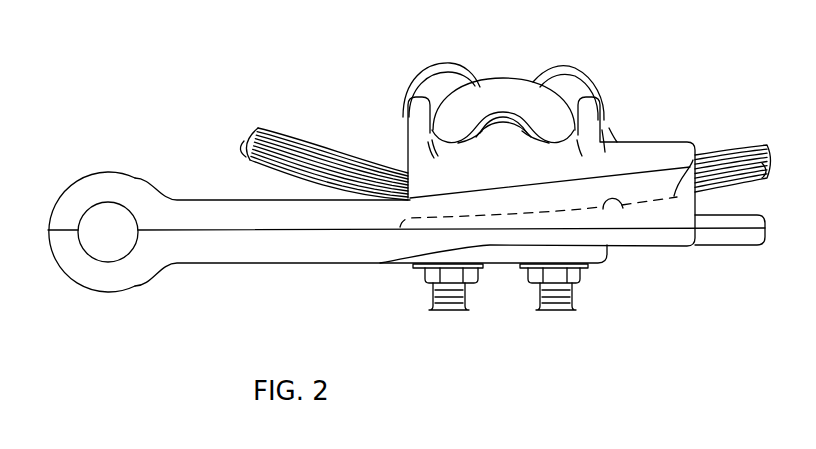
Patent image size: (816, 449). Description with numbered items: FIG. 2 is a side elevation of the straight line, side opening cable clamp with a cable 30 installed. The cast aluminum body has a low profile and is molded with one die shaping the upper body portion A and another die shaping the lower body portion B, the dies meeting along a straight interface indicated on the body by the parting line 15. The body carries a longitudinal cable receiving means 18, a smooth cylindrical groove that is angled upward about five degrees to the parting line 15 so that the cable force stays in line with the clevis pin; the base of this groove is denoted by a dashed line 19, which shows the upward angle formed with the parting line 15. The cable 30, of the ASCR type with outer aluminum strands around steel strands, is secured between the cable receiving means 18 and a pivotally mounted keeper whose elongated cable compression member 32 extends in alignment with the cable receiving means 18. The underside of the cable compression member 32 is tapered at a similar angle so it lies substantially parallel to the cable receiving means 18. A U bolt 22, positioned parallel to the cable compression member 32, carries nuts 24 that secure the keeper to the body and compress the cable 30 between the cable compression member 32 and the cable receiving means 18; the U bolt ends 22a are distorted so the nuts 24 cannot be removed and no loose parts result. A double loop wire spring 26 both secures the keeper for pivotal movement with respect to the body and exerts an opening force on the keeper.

The parting line 15 is at (252, 232).
The cable receiving means 18 is at (693, 156).
The dashed line 19 is at (623, 210).
The U bolt 22 is at (502, 77).
The U bolt ends 22a is at (553, 311).
The nuts 24 is at (582, 276).
The double loop wire spring 26 is at (572, 67).
The cable 30 is at (342, 160).
The cable compression member 32 is at (660, 142).
The upper body portion A is at (206, 223).
The lower body portion B is at (185, 243).